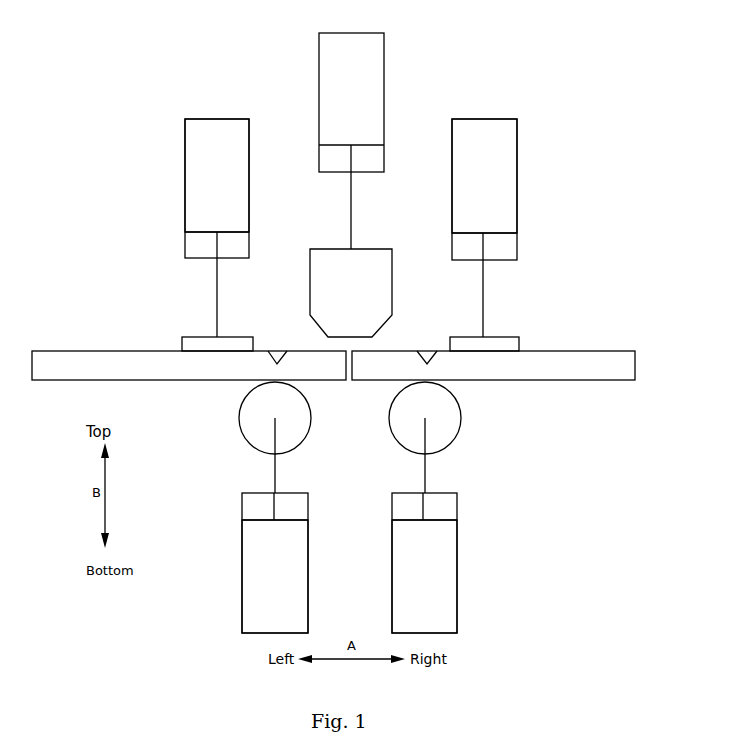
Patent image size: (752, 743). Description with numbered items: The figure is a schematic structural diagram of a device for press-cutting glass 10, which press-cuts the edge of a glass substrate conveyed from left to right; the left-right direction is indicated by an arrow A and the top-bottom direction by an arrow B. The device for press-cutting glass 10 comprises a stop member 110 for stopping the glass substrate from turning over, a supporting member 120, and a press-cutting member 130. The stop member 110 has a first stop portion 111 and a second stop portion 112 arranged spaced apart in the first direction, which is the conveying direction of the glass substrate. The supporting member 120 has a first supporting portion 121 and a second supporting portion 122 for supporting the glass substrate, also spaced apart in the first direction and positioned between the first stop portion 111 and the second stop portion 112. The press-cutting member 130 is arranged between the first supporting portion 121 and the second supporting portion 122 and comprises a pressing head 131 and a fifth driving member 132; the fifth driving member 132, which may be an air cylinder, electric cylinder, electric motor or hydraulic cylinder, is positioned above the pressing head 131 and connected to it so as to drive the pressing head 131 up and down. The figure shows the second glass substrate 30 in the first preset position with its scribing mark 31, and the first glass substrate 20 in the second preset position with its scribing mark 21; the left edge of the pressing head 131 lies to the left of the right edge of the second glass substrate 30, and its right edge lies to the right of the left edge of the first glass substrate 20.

The device for press-cutting glass 10 is at (240, 95).
The stop member 110 is at (150, 150).
The first stop portion 111 is at (200, 196).
The second stop portion 112 is at (495, 215).
The press-cutting member 130 is at (436, 185).
The pressing head 131 is at (368, 277).
The fifth driving member 132 is at (352, 88).
The second glass substrate 30 is at (145, 366).
The scribing mark 31 is at (272, 360).
The first glass substrate 20 is at (545, 360).
The scribing mark 21 is at (425, 355).
The supporting member 120 is at (220, 510).
The first supporting portion 121 is at (260, 600).
The second supporting portion 122 is at (437, 590).